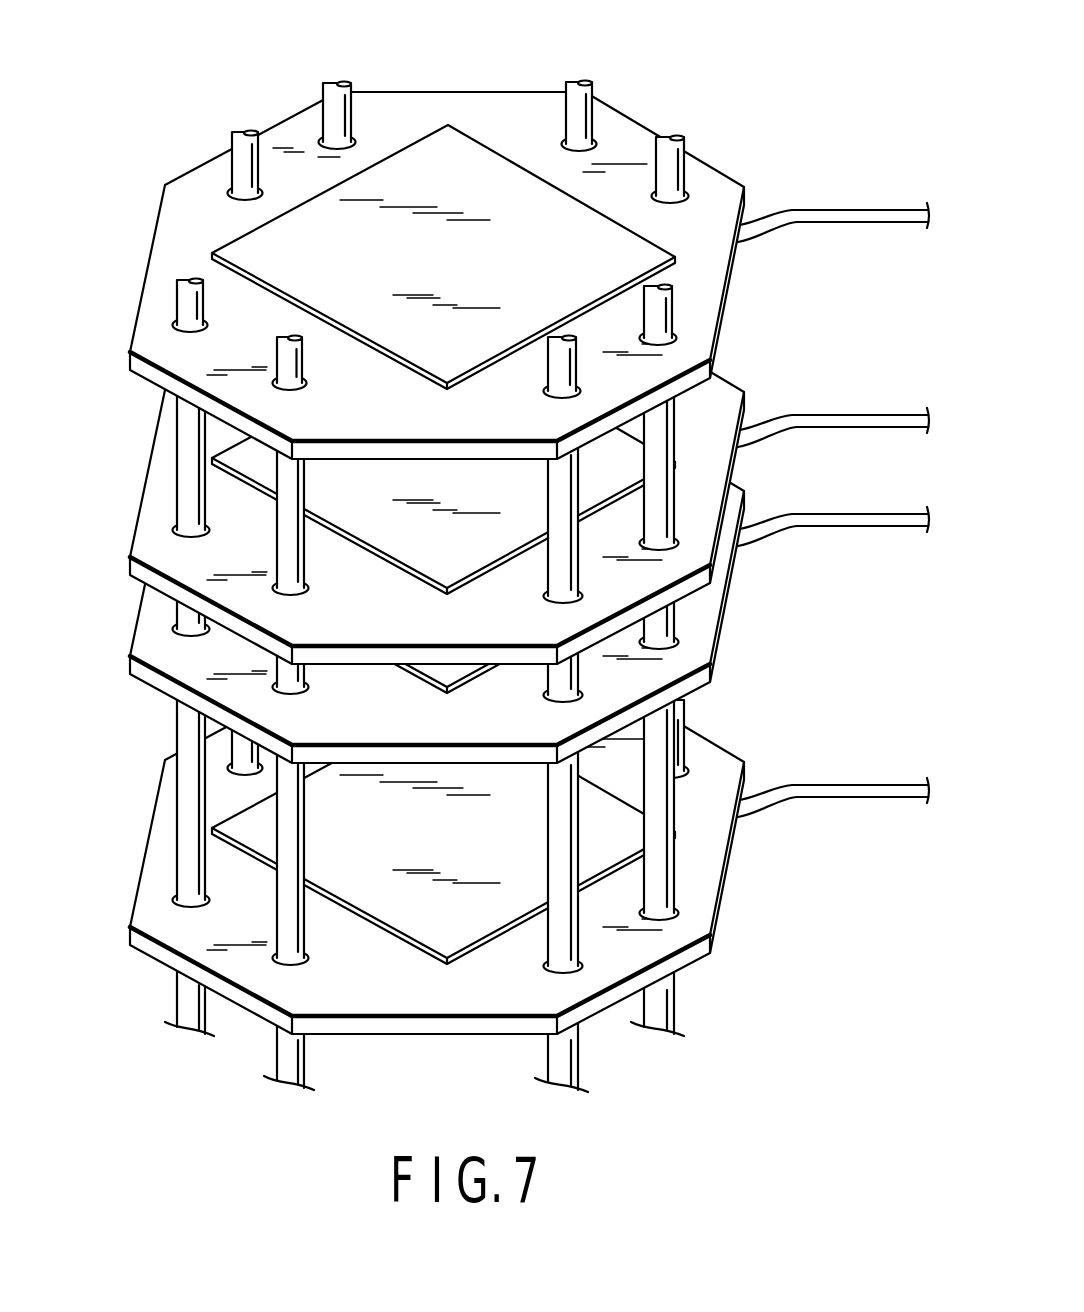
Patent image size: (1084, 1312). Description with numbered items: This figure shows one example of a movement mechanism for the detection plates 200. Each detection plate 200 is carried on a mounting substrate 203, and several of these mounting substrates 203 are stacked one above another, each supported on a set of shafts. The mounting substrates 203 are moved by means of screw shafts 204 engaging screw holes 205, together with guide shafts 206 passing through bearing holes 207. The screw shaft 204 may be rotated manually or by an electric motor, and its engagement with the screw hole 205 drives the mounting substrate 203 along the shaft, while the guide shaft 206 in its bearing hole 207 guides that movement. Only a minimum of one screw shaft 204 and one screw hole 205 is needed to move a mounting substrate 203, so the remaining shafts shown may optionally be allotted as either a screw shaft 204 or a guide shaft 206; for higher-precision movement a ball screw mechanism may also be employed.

The detection plate 200 is at (472, 158).
The mounting substrate 203 is at (713, 201).
The screw shaft 204 is at (177, 290).
The screw hole 205 is at (174, 321).
The guide shaft 206 is at (243, 134).
The bearing hole 207 is at (231, 190).